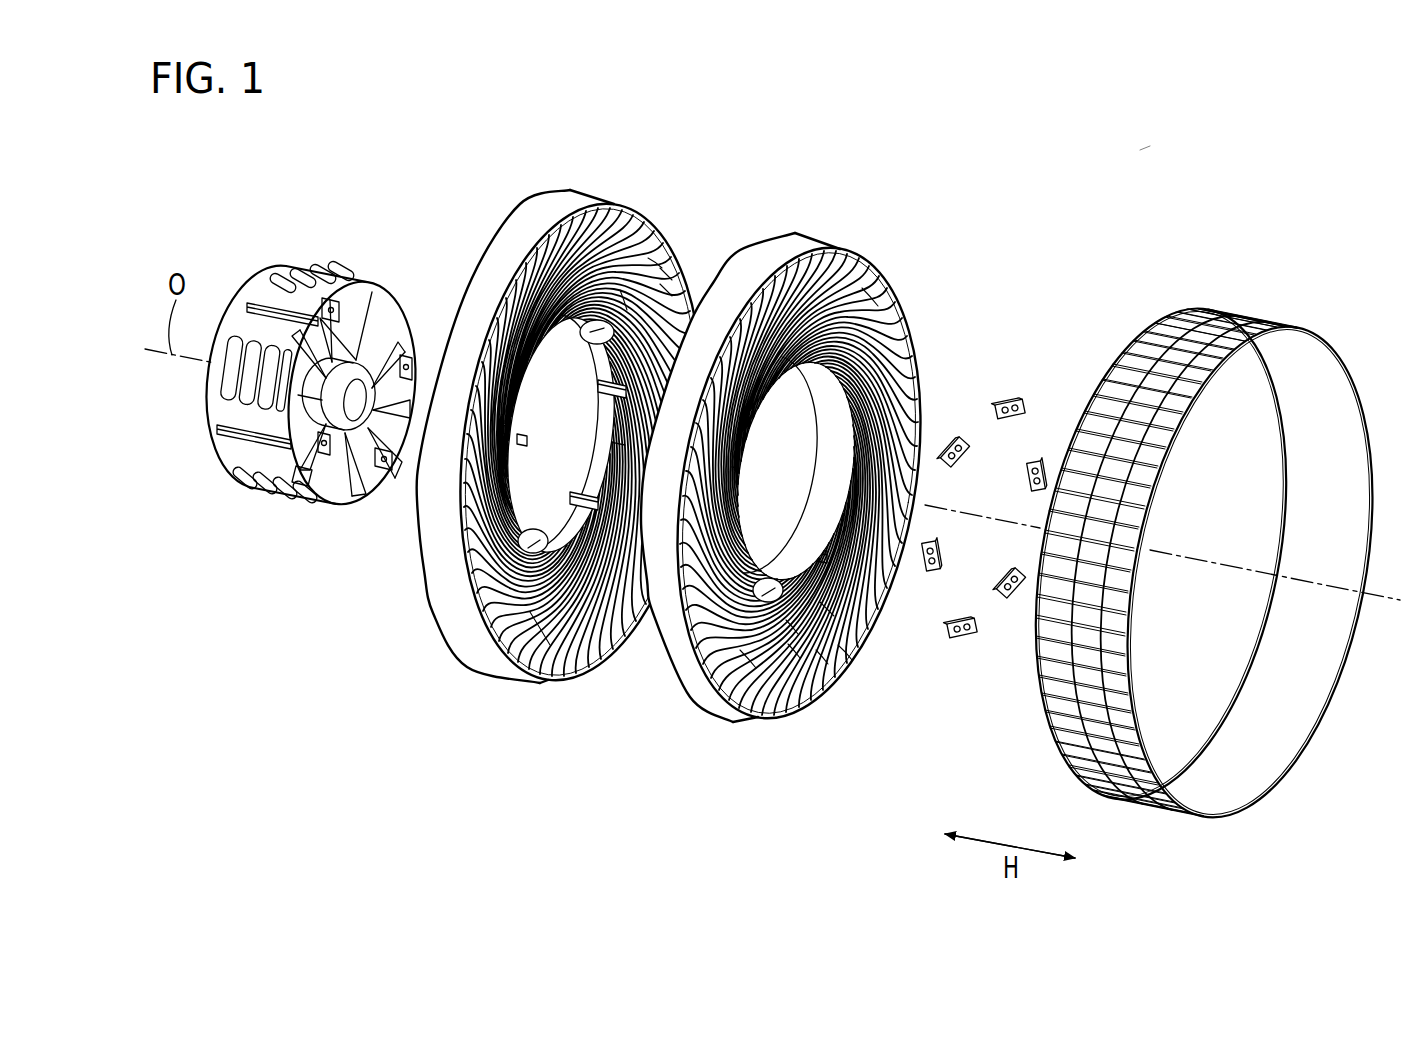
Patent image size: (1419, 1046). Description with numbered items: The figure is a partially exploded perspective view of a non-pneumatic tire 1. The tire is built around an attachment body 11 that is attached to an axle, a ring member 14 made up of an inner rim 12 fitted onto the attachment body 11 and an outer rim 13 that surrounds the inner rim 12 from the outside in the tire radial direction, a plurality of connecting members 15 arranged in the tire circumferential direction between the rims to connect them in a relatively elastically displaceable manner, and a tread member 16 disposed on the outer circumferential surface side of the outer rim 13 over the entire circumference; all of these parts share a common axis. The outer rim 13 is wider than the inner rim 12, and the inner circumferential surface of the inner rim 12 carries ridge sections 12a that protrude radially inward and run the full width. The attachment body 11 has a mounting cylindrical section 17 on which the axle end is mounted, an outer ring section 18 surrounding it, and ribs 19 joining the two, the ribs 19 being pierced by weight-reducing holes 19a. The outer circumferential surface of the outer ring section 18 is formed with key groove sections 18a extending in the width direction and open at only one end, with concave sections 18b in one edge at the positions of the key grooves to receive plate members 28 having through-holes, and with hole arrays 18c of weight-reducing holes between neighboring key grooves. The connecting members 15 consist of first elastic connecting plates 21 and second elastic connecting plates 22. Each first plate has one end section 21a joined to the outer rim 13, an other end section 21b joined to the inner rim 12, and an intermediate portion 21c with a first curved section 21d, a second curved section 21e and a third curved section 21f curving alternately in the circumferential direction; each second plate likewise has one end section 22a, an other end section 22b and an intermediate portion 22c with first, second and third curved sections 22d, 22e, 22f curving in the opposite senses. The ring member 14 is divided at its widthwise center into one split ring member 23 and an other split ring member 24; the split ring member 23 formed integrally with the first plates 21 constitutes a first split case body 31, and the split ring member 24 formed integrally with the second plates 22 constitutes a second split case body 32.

The non-pneumatic tire 1 is at (1150, 148).
The attachment body 11 is at (298, 256).
The inner rim 12 is at (856, 398).
The ridge sections 12a is at (527, 536).
The outer rim 13 is at (922, 325).
The ring member 14 is at (1000, 290).
The connecting members 15 is at (872, 292).
The tread member 16 is at (1249, 298).
The mounting cylindrical section 17 is at (344, 368).
The outer ring section 18 is at (220, 458).
The key groove sections 18a is at (226, 430).
The concave sections 18b is at (383, 464).
The hole arrays 18c is at (228, 384).
The ribs 19 is at (318, 474).
The weight-reducing holes 19a is at (300, 474).
The first elastic connecting plates 21 is at (874, 298).
The one end sections 21a is at (824, 656).
The other end sections 21b is at (764, 587).
The intermediate portions 21c is at (742, 664).
The first curved sections 21d is at (828, 608).
The second curved sections 21e is at (794, 650).
The third curved sections 21f is at (792, 628).
The second elastic connecting plates 22 is at (644, 238).
The one end sections 22a is at (655, 262).
The other end sections 22b is at (592, 340).
The intermediate portions 22c is at (542, 632).
The first curved sections 22d is at (668, 286).
The second curved sections 22e is at (668, 272).
The third curved sections 22f is at (627, 307).
The one split ring member 23 is at (829, 228).
The other split ring member 24 is at (604, 188).
The plate members 28 is at (1016, 398).
The first split case body 31 is at (913, 141).
The second split case body 32 is at (688, 97).